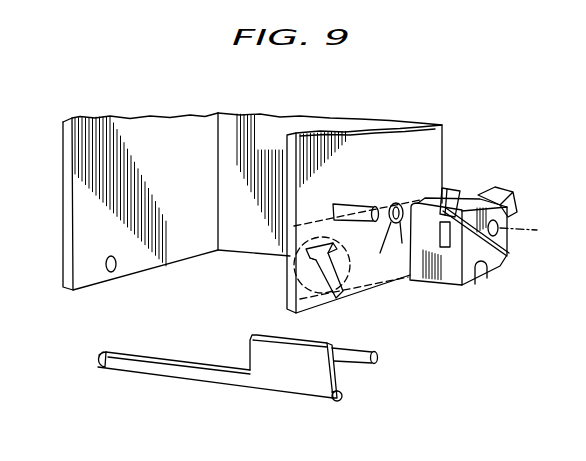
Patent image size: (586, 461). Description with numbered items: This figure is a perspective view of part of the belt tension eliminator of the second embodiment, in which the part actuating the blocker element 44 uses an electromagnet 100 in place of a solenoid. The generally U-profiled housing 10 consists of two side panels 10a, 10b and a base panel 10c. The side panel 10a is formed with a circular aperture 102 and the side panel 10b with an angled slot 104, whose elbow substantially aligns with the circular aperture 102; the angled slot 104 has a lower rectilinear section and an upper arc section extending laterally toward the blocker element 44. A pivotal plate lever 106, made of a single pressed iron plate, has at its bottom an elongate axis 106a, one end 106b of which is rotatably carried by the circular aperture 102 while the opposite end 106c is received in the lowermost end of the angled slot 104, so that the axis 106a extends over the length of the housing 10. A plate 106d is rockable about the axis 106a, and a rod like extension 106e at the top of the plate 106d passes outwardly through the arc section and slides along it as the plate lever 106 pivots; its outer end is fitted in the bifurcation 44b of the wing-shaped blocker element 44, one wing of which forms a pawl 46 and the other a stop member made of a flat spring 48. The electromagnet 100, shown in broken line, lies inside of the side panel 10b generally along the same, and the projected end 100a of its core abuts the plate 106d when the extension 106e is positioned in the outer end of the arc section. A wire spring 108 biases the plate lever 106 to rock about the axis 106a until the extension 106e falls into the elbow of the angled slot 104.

The housing 10 is at (288, 195).
The side panel 10a is at (138, 133).
The side panel 10b is at (430, 141).
The base panel 10c is at (270, 128).
The blocker element 44 is at (505, 268).
The bifurcation 44b is at (480, 275).
The pawl 46 is at (511, 201).
The flat spring 48 is at (452, 192).
The electromagnet 100 is at (367, 296).
The projected end of electromagnet core 100a is at (296, 268).
The circular aperture 102 is at (113, 272).
The angled slot 104 is at (306, 283).
The pivotal plate lever 106 is at (236, 388).
The elongate axis 106a is at (183, 373).
The end of axis 106b is at (98, 360).
The opposite end of axis 106c is at (343, 396).
The plate 106d is at (253, 352).
The rod like extension 106e is at (378, 360).
The wire spring 108 is at (394, 203).